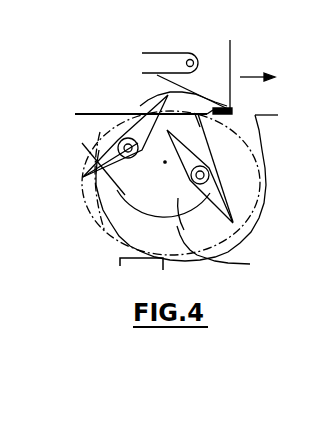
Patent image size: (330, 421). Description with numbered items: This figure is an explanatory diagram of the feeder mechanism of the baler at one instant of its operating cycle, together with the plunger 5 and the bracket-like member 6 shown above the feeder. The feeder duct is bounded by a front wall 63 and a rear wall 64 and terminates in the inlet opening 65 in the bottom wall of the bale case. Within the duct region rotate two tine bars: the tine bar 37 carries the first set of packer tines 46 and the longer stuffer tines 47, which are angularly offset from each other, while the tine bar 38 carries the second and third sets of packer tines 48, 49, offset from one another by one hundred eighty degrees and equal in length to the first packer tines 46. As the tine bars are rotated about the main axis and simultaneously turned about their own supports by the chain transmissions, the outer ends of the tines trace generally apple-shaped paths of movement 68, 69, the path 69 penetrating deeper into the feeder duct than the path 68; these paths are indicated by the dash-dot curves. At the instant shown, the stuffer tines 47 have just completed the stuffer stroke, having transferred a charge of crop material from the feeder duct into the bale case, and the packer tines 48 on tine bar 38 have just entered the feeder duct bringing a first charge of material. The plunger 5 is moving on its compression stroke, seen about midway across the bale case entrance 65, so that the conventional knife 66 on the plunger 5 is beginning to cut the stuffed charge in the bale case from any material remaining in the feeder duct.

The plunger 5 is at (225, 63).
The support bracket 6 is at (160, 63).
The tine bar 37 is at (97, 185).
The tine bar 38 is at (212, 181).
The first set of packer tines 46 is at (129, 158).
The stuffer tines 47 is at (150, 112).
The second set of packer tines 48 is at (212, 208).
The third set of packer tines 49 is at (183, 168).
The front wall 63 is at (229, 253).
The rear wall 64 is at (266, 188).
The inlet opening 65 is at (254, 111).
The knife 66 is at (235, 106).
The path of movement 68 is at (209, 176).
The path of movement 69 is at (224, 122).